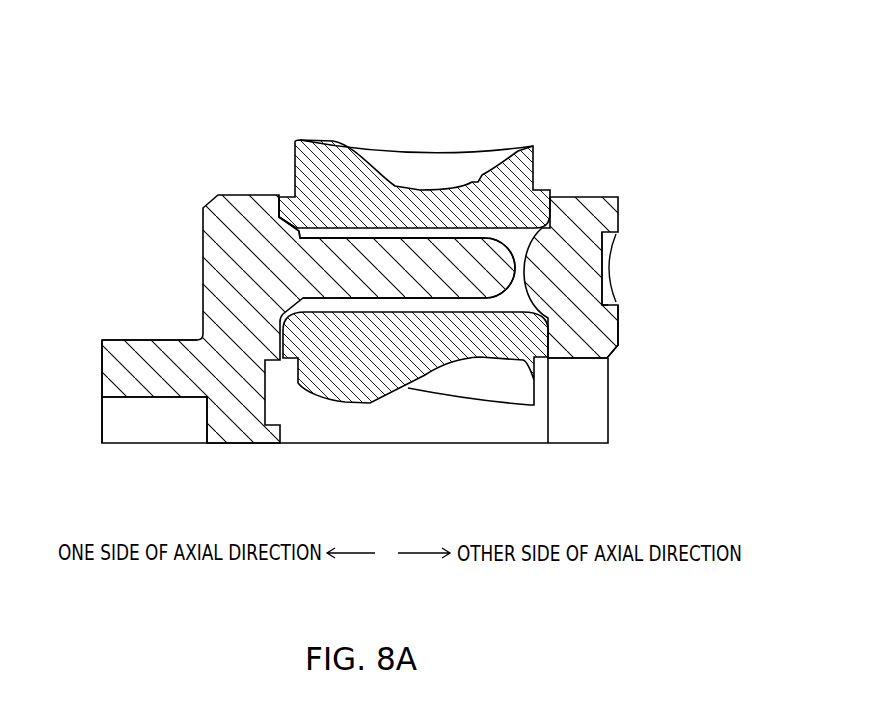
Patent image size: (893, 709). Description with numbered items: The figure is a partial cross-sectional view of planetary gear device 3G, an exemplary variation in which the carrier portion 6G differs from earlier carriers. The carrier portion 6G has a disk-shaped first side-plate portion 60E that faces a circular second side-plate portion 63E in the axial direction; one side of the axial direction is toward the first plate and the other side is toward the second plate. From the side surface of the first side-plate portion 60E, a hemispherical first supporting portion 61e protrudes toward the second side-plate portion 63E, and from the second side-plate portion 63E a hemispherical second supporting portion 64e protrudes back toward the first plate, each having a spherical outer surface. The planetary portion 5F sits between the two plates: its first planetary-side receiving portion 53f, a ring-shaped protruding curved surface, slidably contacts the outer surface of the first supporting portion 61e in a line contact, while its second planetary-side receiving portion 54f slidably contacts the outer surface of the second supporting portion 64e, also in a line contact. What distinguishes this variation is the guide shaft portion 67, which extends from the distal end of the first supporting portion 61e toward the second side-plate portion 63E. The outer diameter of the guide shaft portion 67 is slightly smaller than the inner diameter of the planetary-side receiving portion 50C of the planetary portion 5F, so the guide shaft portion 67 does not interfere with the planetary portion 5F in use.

The planetary portion 5F is at (440, 133).
The guide shaft portion 67 is at (384, 262).
The carrier portion 6G is at (238, 183).
The second side-plate portion 63E is at (591, 232).
The first planetary-side receiving portion 53f is at (283, 225).
The first supporting portion 61e is at (283, 247).
The planetary gear device 3G is at (103, 333).
The first side-plate portion 60E is at (235, 294).
The second planetary-side receiving portion 54f is at (600, 234).
The second supporting portion 64e is at (606, 346).
The planetary-side receiving portion 50C is at (428, 200).